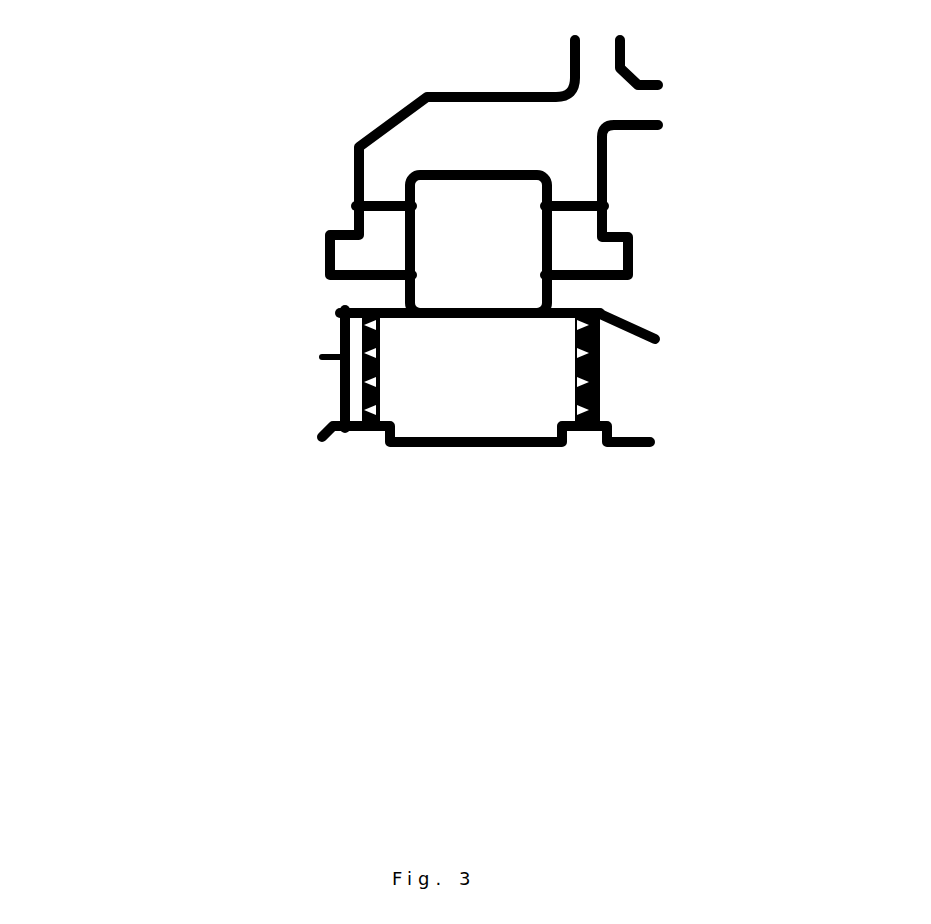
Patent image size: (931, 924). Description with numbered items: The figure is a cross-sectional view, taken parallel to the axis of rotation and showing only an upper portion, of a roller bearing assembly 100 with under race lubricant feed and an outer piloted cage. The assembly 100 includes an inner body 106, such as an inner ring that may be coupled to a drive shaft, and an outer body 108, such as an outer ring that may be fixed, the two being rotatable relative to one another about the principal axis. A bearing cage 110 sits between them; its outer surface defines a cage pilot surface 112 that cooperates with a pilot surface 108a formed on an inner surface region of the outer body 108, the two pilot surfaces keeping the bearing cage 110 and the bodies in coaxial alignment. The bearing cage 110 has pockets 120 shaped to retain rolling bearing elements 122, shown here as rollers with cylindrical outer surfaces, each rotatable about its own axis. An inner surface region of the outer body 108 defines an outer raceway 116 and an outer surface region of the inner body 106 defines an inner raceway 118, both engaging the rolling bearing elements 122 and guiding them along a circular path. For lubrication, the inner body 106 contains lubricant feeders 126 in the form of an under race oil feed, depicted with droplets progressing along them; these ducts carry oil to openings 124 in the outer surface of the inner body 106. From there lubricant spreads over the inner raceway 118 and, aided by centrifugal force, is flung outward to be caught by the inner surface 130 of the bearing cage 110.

The assembly 100 is at (273, 208).
The inner body 106 is at (648, 357).
The outer body 108 is at (395, 150).
The pilot surface 108a is at (357, 207).
The bearing cage 110 is at (350, 253).
The cage pilot surface 112 is at (605, 210).
The outer raceway 116 is at (462, 167).
The inner raceway 118 is at (447, 318).
The pocket 120 is at (403, 255).
The rolling bearing element 122 is at (517, 291).
The opening 124 is at (602, 323).
The lubricant feeder 126 is at (573, 442).
The inner surface 130 is at (358, 280).